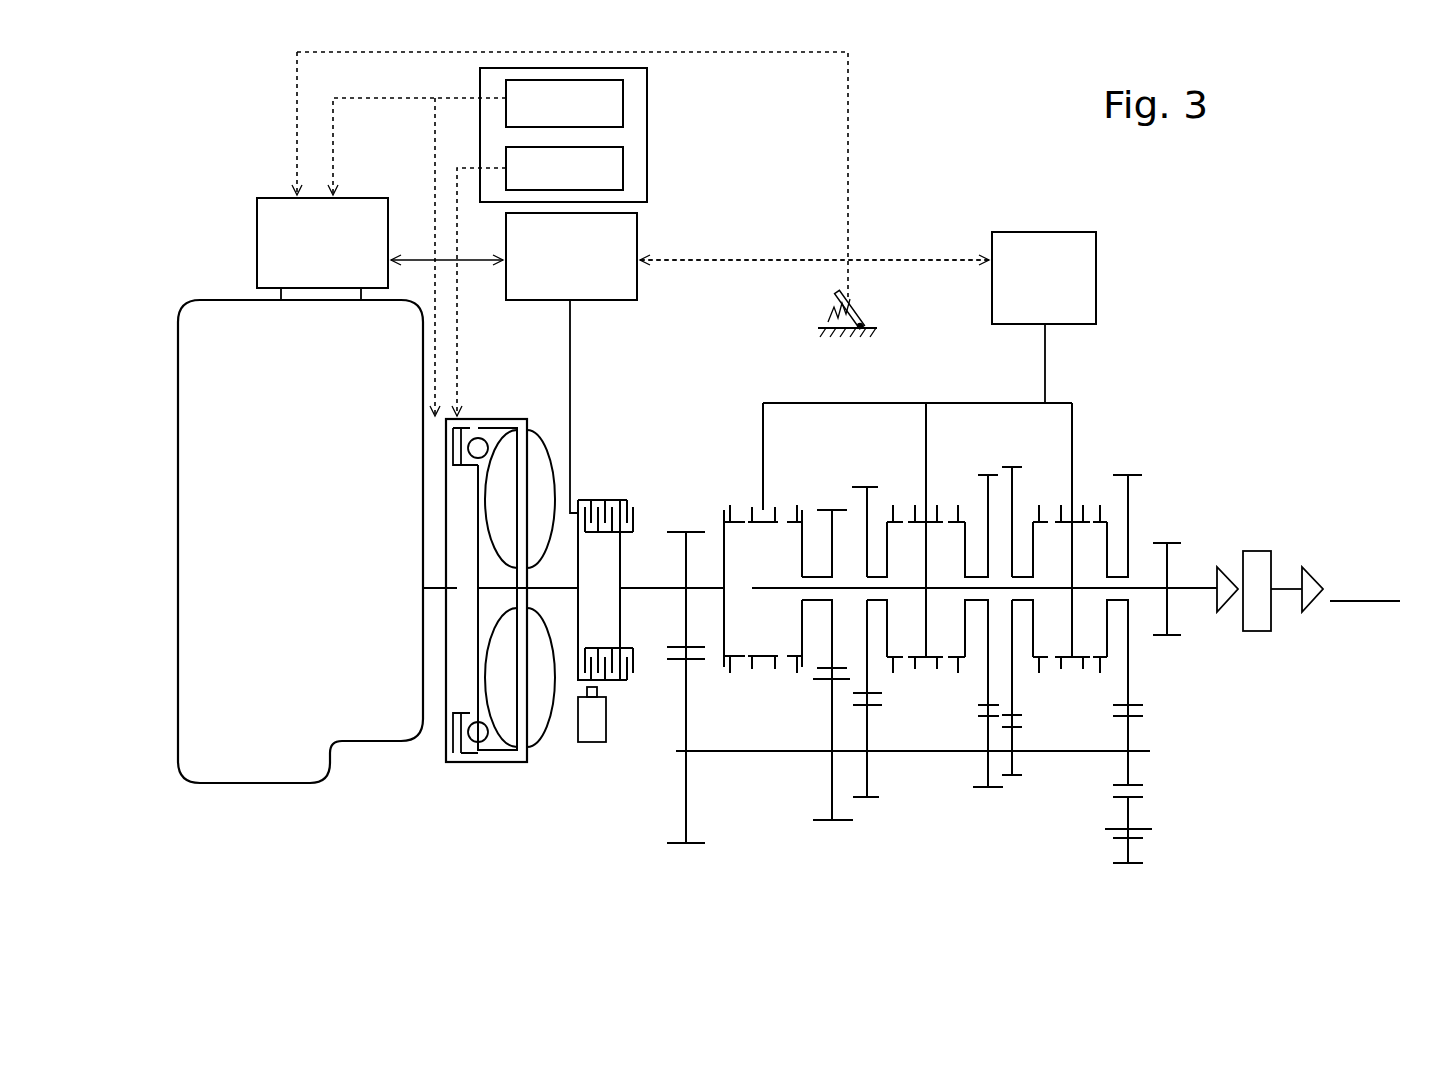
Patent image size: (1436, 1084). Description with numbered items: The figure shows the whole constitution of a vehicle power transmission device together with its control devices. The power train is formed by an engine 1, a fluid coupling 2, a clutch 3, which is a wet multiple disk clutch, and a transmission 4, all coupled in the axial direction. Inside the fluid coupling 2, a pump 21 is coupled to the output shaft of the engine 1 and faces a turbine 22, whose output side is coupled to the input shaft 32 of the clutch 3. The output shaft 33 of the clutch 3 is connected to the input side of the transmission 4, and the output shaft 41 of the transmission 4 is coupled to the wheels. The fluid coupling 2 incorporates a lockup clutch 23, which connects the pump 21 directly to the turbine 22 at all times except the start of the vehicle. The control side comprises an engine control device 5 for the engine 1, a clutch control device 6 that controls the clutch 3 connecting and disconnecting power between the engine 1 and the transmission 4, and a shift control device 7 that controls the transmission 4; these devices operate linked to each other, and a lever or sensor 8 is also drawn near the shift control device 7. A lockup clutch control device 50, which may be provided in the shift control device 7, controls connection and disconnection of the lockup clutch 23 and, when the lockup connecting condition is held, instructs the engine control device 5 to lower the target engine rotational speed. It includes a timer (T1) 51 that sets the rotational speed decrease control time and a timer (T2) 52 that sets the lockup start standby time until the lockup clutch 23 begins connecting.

The engine 1 is at (256, 788).
The fluid coupling 2 is at (495, 620).
The clutch 3 is at (631, 549).
The transmission 4 is at (1010, 672).
The engine control device 5 is at (274, 214).
The clutch control device 6 is at (620, 301).
The shift control device 7 is at (1099, 284).
The shift lever 8 is at (861, 309).
The pump 21 is at (536, 460).
The turbine 22 is at (507, 460).
The lockup clutch 23 is at (450, 741).
The input shaft 32 is at (555, 584).
The output shaft 33 is at (633, 584).
The output shaft 41 is at (1188, 585).
The lockup clutch control device 50 is at (647, 83).
The timer (T1) 51 is at (623, 110).
The timer (T2) 52 is at (623, 172).